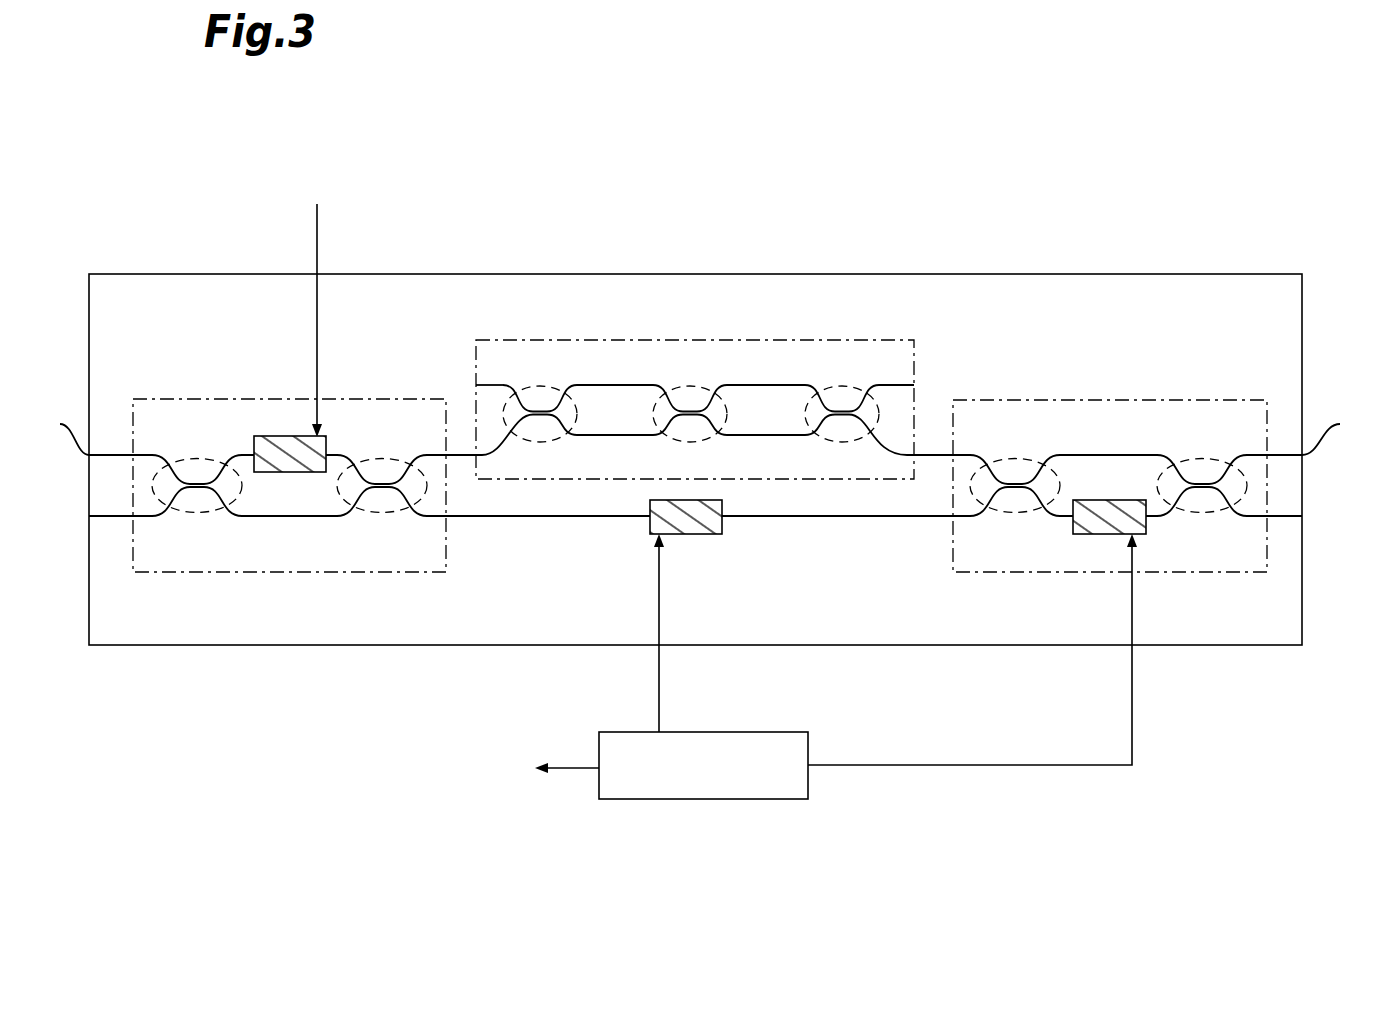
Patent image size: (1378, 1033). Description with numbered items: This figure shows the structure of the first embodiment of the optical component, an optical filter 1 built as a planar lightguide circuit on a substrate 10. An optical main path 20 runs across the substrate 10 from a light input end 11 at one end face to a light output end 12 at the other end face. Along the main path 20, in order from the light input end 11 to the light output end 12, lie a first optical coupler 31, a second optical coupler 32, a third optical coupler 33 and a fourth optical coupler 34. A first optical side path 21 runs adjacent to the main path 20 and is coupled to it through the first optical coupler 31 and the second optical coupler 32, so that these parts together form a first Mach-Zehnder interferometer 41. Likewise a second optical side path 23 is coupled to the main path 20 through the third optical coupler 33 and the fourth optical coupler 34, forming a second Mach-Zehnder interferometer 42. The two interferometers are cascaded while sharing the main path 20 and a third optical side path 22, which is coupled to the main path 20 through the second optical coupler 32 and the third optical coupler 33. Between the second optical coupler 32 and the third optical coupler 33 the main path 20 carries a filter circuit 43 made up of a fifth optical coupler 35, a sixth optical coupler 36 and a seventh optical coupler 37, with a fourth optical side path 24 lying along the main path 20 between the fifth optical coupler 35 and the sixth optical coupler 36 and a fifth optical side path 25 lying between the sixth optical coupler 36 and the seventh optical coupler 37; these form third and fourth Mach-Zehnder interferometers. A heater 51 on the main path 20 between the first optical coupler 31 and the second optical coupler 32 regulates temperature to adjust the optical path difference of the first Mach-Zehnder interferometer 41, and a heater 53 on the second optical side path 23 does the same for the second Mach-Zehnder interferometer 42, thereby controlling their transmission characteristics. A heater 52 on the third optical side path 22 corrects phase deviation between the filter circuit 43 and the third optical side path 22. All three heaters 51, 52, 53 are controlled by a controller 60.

The optical filter 1 is at (817, 163).
The substrate 10 is at (457, 274).
The light input end 11 is at (90, 460).
The light output end 12 is at (1311, 460).
The optical main path 20 is at (933, 455).
The first optical side path 21 is at (290, 517).
The third optical side path 22 is at (789, 518).
The second optical side path 23 is at (1063, 518).
The fourth optical side path 24 is at (624, 385).
The fifth optical side path 25 is at (772, 385).
The first optical coupler 31 is at (197, 516).
The second optical coupler 32 is at (384, 516).
The third optical coupler 33 is at (1003, 517).
The fourth optical coupler 34 is at (1190, 517).
The fifth optical coupler 35 is at (545, 387).
The sixth optical coupler 36 is at (692, 387).
The seventh optical coupler 37 is at (847, 387).
The first Mach-Zehnder interferometer 41 is at (230, 399).
The second Mach-Zehnder interferometer 42 is at (1130, 400).
The filter circuit 43 is at (580, 340).
The heater 51 is at (296, 436).
The heater 52 is at (688, 536).
The heater 53 is at (1106, 536).
The controller 60 is at (765, 800).